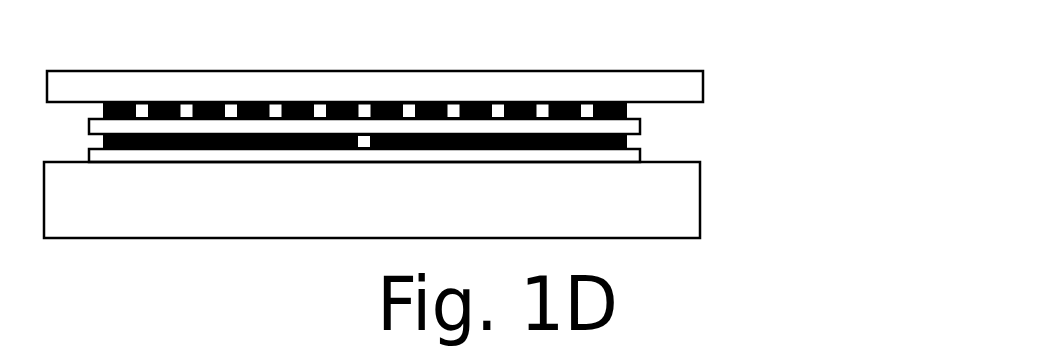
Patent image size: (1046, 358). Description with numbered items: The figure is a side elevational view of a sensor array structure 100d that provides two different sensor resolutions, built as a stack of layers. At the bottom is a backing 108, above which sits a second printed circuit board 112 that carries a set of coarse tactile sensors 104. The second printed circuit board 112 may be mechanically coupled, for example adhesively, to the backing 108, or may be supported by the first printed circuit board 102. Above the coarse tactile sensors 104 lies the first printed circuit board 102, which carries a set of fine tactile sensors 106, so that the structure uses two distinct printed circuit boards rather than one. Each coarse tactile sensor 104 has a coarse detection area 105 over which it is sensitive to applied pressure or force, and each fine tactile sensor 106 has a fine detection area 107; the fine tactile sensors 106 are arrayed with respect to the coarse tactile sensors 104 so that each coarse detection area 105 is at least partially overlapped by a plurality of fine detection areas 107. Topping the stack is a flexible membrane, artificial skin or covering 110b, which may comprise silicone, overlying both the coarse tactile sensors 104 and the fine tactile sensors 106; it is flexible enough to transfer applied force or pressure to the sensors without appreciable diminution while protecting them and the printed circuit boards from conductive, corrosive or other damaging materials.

The flexible membrane, artificial skin or covering 110b is at (703, 90).
The fine tactile sensors 106 is at (627, 112).
The first printed circuit board 102 is at (640, 128).
The coarse tactile sensors 104 is at (627, 142).
The second printed circuit board 112 is at (640, 157).
The backing 108 is at (700, 205).
The fine detection area 107 is at (635, 62).
The coarse detection area 105 is at (363, 172).
The sensor array structure 100d is at (863, 45).